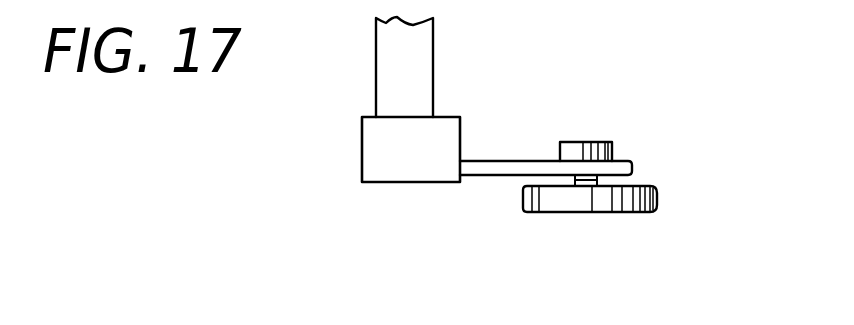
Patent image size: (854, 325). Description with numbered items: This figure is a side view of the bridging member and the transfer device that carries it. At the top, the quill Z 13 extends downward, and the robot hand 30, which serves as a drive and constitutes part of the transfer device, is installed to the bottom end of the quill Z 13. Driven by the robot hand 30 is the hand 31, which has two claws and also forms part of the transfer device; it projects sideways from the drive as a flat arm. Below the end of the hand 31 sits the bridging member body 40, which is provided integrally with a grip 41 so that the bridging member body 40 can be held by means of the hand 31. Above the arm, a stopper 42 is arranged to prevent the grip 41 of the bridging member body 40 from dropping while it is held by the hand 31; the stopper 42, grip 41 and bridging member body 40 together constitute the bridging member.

The quill Z 13 is at (387, 70).
The robot hand 30 is at (377, 147).
The hand 31 is at (510, 168).
The bridging member body 40 is at (640, 213).
The grip 41 is at (593, 175).
The stopper 42 is at (595, 142).